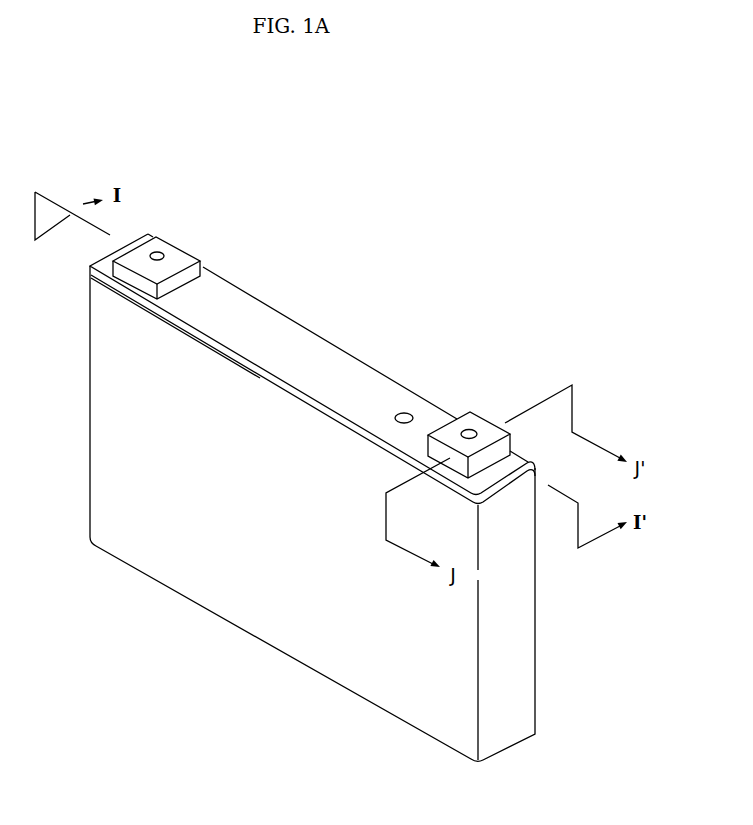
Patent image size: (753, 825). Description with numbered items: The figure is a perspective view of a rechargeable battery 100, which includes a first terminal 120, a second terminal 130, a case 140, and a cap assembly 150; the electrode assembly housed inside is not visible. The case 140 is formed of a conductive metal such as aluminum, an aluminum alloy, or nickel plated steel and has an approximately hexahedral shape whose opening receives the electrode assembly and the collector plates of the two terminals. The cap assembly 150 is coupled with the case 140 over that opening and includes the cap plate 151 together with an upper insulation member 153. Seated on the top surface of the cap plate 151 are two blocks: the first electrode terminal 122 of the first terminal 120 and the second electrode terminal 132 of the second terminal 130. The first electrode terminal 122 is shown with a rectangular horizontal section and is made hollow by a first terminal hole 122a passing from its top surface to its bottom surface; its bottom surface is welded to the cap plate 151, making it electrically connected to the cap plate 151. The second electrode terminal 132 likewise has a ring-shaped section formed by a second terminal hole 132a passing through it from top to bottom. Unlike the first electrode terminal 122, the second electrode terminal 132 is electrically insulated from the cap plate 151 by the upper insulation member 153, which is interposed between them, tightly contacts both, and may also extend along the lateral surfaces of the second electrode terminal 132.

The rechargeable battery 100 is at (603, 208).
The first terminal 120 is at (477, 413).
The first electrode terminal 122 is at (477, 422).
The first terminal hole 122a is at (468, 429).
The second terminal 130 is at (172, 235).
The second electrode terminal 132 is at (172, 246).
The second terminal hole 132a is at (153, 251).
The case 140 is at (258, 627).
The cap assembly 150 is at (312, 368).
The cap plate 151 is at (292, 321).
The upper insulation member 153 is at (203, 287).